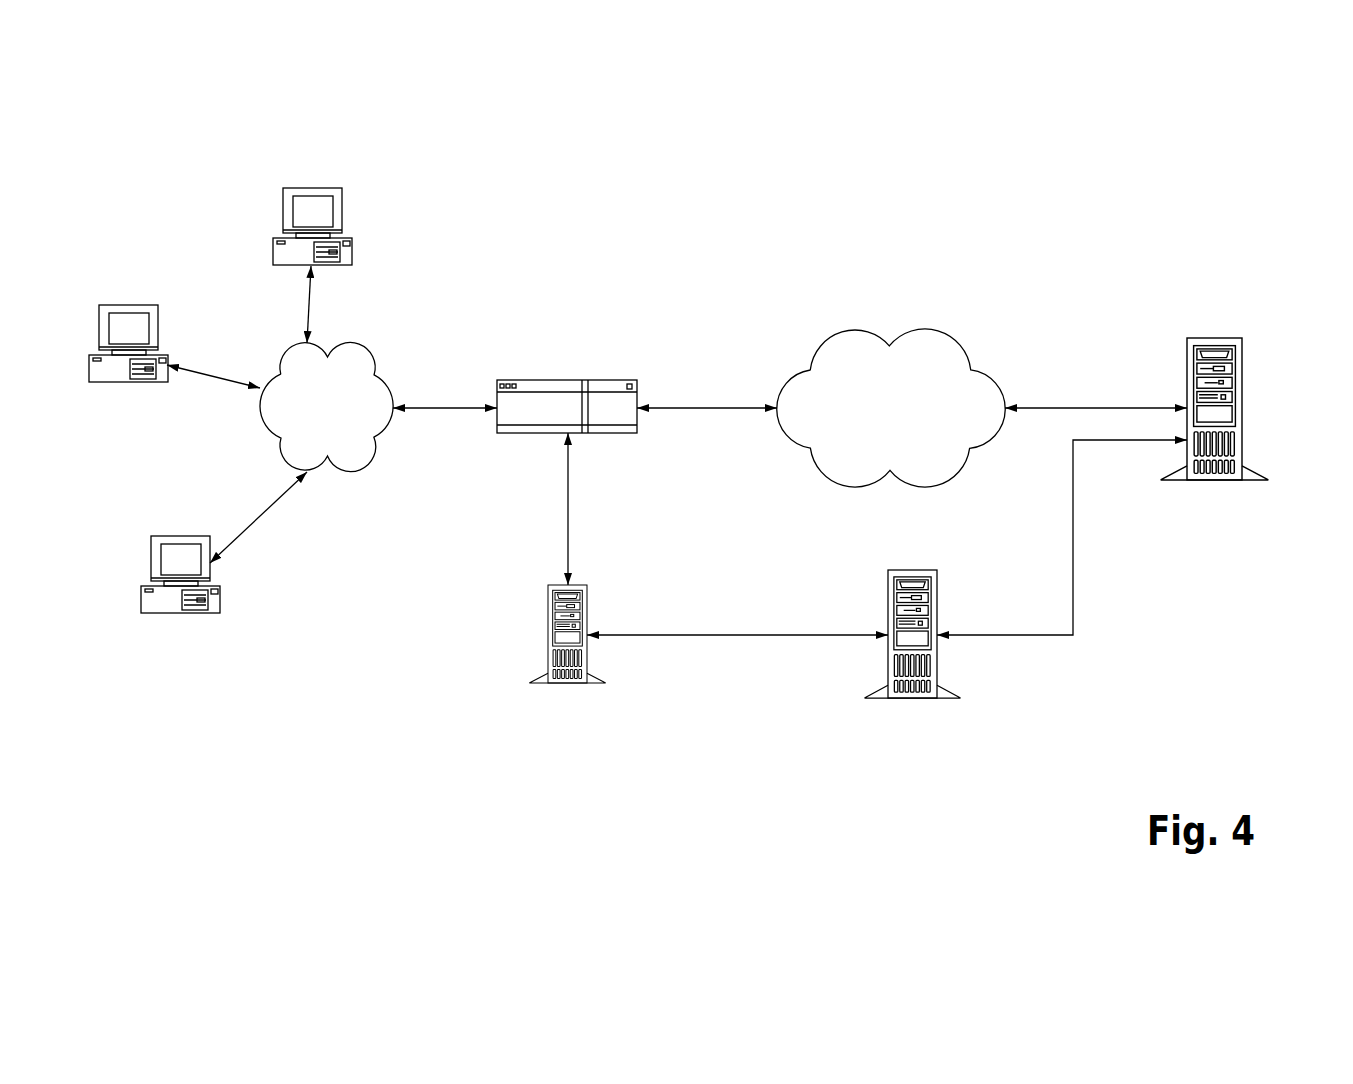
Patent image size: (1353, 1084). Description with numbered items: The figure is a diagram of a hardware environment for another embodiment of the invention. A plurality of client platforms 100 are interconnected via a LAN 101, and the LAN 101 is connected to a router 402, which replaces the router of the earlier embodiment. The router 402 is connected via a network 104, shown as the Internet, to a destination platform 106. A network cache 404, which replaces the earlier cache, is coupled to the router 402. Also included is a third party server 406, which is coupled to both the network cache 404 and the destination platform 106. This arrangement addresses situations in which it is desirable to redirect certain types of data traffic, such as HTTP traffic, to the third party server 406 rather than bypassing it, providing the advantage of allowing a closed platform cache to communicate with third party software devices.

The client platform 100 is at (330, 188).
The LAN 101 is at (368, 362).
The router 402 is at (615, 380).
The network 104 is at (843, 333).
The destination platform 106 is at (1230, 338).
The network cache 404 is at (588, 597).
The third party server 406 is at (937, 593).